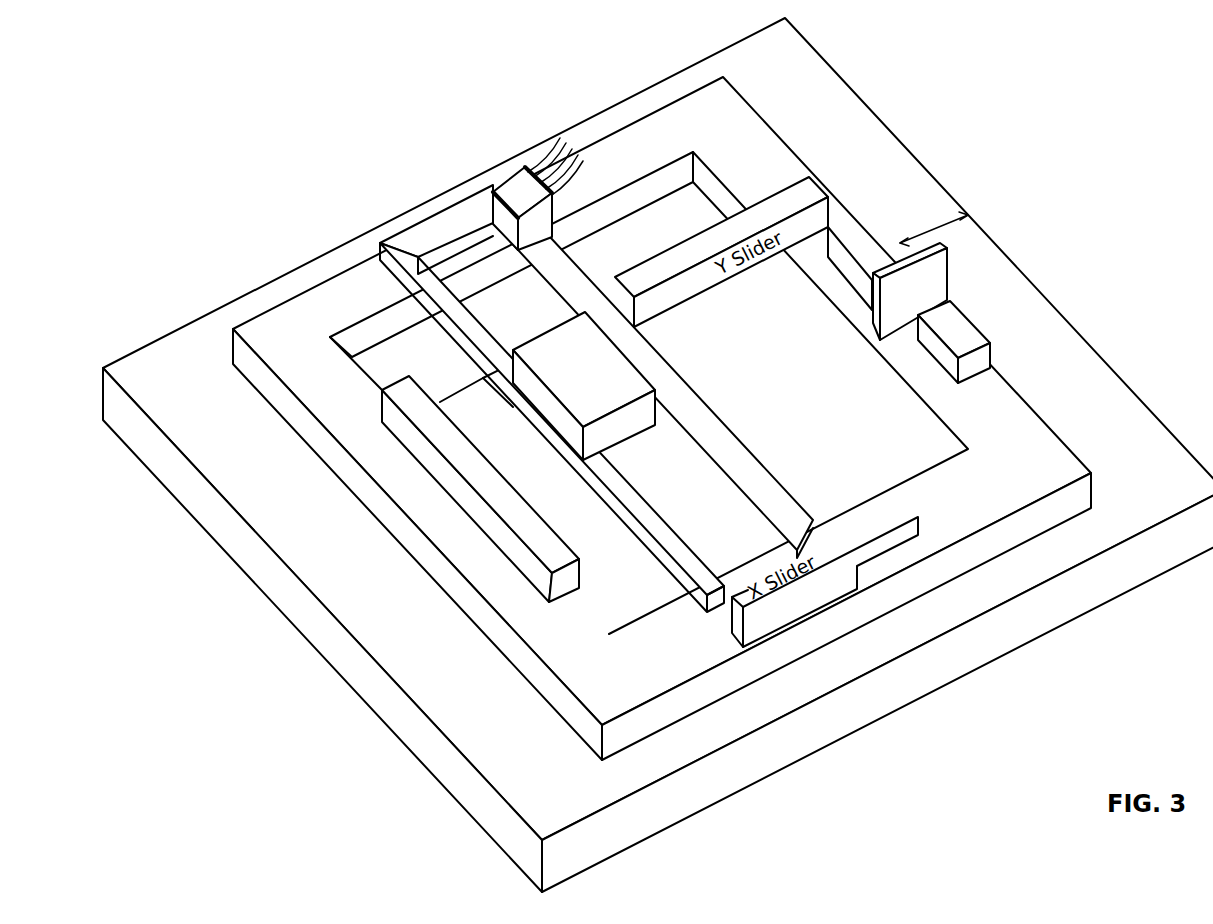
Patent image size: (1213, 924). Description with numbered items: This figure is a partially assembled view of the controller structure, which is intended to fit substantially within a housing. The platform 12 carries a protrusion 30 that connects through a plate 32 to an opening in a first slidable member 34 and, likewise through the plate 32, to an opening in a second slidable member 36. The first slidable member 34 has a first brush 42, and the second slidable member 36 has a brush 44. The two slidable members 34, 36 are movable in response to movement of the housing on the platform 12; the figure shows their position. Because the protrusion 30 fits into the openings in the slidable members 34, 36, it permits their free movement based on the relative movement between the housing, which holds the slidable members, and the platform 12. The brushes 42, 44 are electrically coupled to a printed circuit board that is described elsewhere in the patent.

The platform 12 is at (1110, 372).
The protrusion 30 is at (535, 337).
The plate 32 is at (1091, 473).
The first slidable member 34 is at (990, 356).
The second slidable member 36 is at (420, 220).
The first brush 42 is at (972, 233).
The brush 44 is at (533, 148).